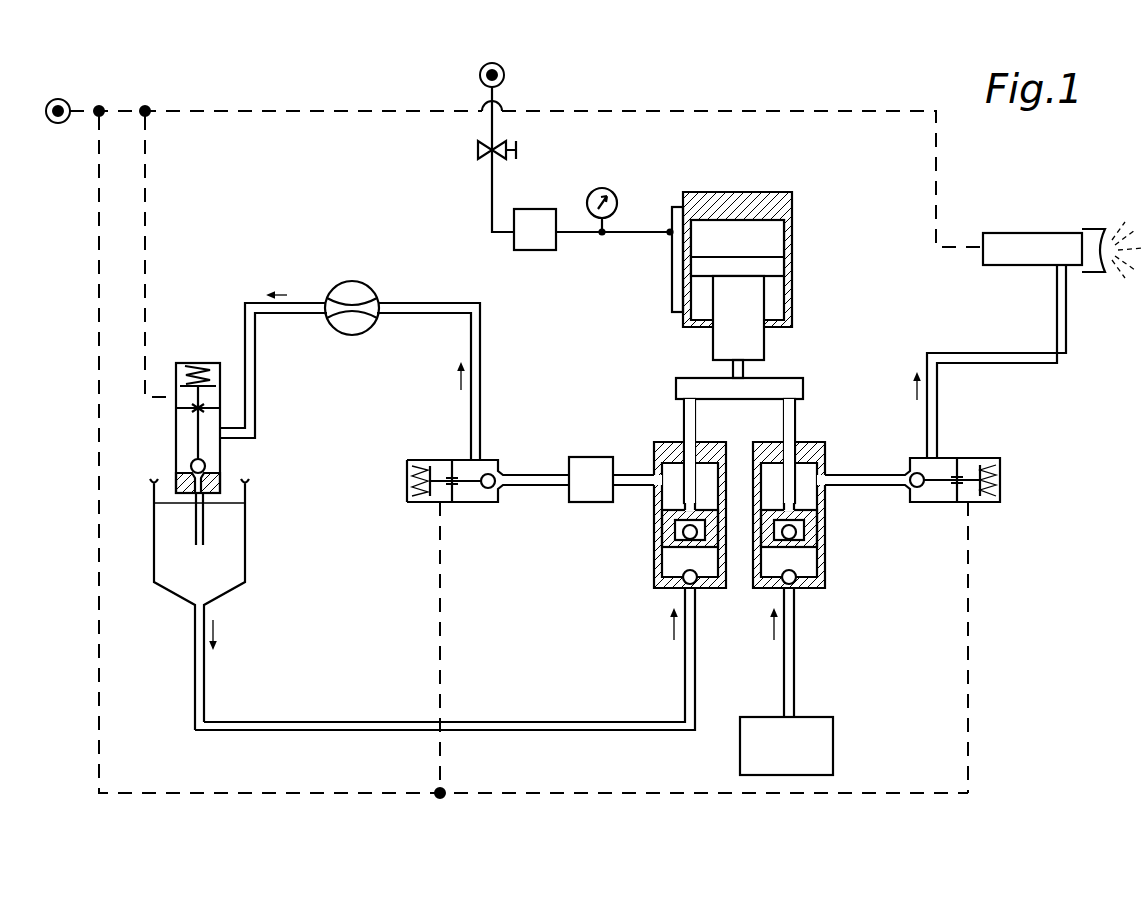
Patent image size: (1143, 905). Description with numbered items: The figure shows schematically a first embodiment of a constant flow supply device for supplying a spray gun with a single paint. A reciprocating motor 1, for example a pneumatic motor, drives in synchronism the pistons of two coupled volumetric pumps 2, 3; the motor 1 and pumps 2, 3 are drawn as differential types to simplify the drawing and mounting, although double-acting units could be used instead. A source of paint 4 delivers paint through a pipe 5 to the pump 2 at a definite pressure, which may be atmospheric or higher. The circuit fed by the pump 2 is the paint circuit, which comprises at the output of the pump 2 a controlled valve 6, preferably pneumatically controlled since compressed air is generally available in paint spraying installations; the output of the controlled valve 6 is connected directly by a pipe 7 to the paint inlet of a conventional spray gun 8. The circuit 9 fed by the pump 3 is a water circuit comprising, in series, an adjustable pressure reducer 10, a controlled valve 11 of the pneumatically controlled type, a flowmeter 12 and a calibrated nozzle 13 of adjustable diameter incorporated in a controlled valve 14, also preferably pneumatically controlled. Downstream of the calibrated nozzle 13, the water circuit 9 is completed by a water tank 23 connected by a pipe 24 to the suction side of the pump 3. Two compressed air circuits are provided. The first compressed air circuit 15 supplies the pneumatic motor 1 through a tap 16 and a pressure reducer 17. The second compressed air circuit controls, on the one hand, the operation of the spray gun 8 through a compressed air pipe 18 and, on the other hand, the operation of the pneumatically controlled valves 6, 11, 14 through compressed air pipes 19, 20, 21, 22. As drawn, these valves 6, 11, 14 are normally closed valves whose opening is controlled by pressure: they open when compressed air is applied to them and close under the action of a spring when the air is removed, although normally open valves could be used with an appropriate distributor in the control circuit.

The reciprocating motor 1 is at (792, 201).
The volumetric pump 2 is at (815, 442).
The volumetric pump 3 is at (670, 442).
The source of paint 4 is at (786, 746).
The pipe 5 is at (800, 648).
The controlled valve 6 is at (960, 458).
The pipe 7 is at (1000, 353).
The spray gun 8 is at (1050, 233).
The water circuit 9 is at (486, 428).
The adjustable pressure reducer 10 is at (590, 462).
The controlled valve 11 is at (447, 460).
The flowmeter 12 is at (346, 282).
The calibrated nozzle 13 is at (176, 478).
The controlled valve 14 is at (176, 368).
The first compressed air circuit 15 is at (478, 228).
The tap 16 is at (486, 146).
The pressure reducer 17 is at (538, 210).
The compressed air pipe 18 is at (748, 111).
The compressed air pipe 19 is at (145, 225).
The compressed air pipe 20 is at (99, 268).
The compressed air pipe 21 is at (440, 590).
The compressed air pipe 22 is at (968, 652).
The water tank 23 is at (245, 540).
The pipe 24 is at (599, 722).